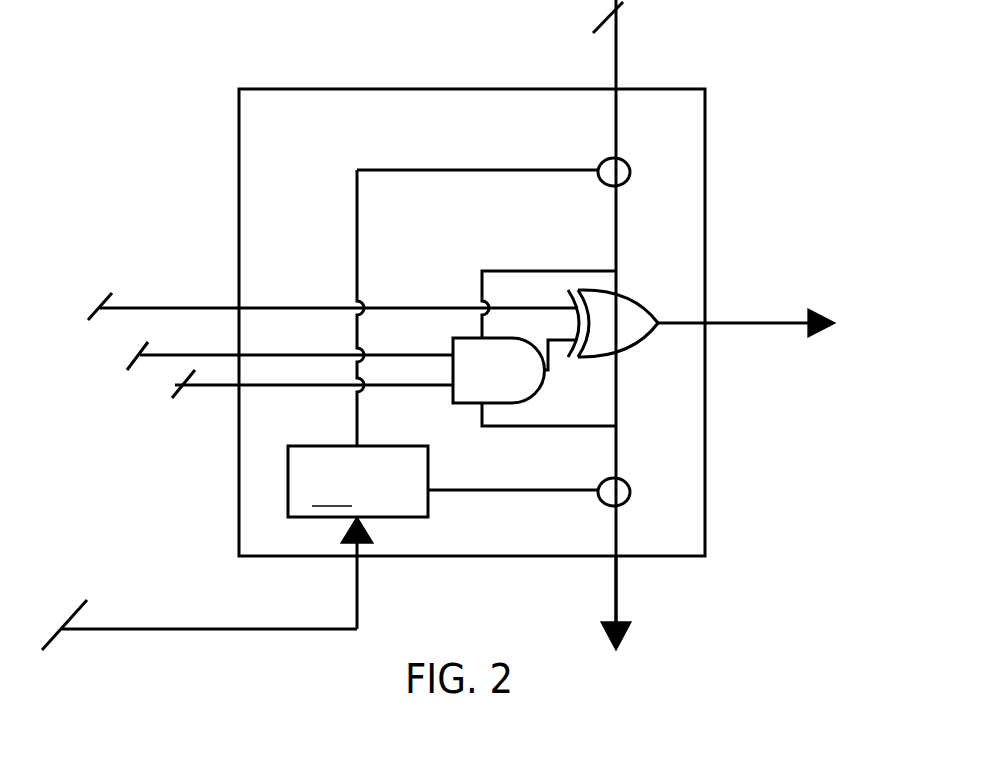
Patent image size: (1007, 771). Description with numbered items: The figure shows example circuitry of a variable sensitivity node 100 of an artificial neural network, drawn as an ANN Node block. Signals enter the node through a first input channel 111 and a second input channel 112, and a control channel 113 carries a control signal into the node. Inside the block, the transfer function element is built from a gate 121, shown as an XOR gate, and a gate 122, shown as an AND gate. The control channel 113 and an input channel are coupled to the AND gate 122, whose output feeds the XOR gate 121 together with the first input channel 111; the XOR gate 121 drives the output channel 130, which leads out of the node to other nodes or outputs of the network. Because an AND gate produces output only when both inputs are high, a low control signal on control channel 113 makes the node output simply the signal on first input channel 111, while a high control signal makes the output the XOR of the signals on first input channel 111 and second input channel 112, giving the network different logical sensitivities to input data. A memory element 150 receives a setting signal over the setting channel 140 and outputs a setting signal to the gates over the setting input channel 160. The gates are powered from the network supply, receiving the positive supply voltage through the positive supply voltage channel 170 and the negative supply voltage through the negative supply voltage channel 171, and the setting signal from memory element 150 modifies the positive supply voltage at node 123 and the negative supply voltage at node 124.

The variable sensitivity node 100 is at (428, 125).
The first input channel 111 is at (105, 318).
The second input channel 112 is at (155, 358).
The control channel 113 is at (200, 387).
The gate 121 is at (634, 338).
The gate 122 is at (510, 380).
The node 123 is at (521, 173).
The node 124 is at (557, 502).
The output channel 130 is at (727, 324).
The setting channel 140 is at (157, 632).
The memory element 150 is at (356, 186).
The setting input channel 160 is at (356, 408).
The positive supply voltage channel 170 is at (616, 63).
The negative supply voltage channel 171 is at (616, 608).